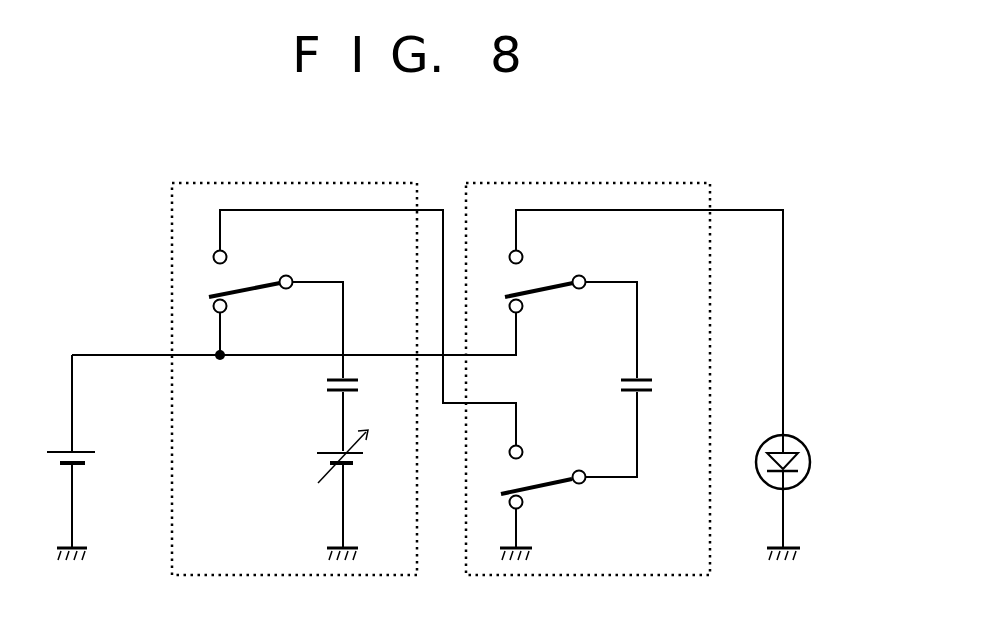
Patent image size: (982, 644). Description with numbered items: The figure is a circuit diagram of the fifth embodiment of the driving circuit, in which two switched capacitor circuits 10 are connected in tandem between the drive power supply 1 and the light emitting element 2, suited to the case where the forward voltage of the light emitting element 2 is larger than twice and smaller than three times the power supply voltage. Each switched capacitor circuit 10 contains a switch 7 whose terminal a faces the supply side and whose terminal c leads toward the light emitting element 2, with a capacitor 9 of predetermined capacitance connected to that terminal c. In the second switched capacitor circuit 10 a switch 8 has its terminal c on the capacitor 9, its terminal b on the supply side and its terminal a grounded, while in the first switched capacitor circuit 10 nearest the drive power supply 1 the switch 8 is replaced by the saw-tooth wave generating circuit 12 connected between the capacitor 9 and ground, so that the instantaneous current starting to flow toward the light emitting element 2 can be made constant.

The drive power supply 1 is at (80, 443).
The light emitting element 2 is at (810, 470).
The switch 7 is at (258, 262).
The switch 8 is at (547, 458).
The capacitor 9 is at (363, 385).
The switched capacitor circuit 10 is at (573, 183).
The saw-tooth wave generating circuit 12 is at (320, 460).